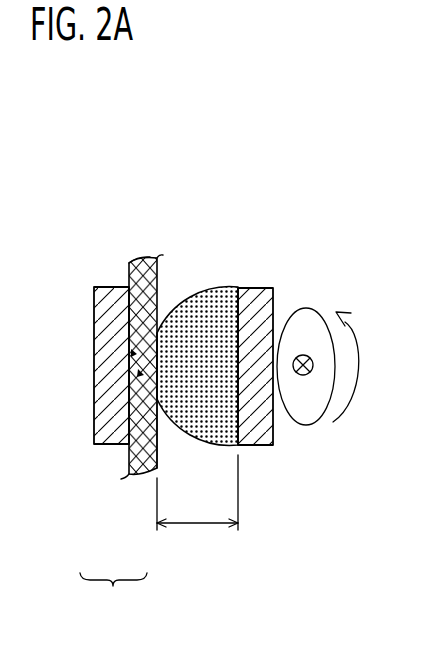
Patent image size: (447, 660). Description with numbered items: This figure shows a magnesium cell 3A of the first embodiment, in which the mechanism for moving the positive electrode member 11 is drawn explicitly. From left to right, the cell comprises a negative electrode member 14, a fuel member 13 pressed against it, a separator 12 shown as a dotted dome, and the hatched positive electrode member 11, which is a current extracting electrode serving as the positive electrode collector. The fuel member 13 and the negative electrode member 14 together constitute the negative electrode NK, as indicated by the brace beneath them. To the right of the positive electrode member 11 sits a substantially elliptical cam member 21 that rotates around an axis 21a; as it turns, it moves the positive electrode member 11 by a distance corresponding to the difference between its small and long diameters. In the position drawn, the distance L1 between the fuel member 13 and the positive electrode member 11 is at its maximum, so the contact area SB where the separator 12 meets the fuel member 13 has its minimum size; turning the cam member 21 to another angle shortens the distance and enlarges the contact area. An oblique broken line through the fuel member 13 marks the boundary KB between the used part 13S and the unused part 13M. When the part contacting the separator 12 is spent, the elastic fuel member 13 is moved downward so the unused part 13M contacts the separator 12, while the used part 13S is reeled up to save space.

The magnesium cell 3A is at (240, 123).
The positive electrode member 11 is at (259, 292).
The separator 12 is at (208, 291).
The fuel member 13 is at (125, 480).
The unused part 13M is at (128, 263).
The used part 13S is at (157, 443).
The negative electrode member 14 is at (103, 446).
The cam member 21 is at (310, 310).
The axis 21a is at (304, 375).
The light shielding boundary (SS4) SB is at (157, 333).
The boundary KB is at (140, 378).
The distance L1 is at (197, 492).
The negative electrode NK is at (113, 599).